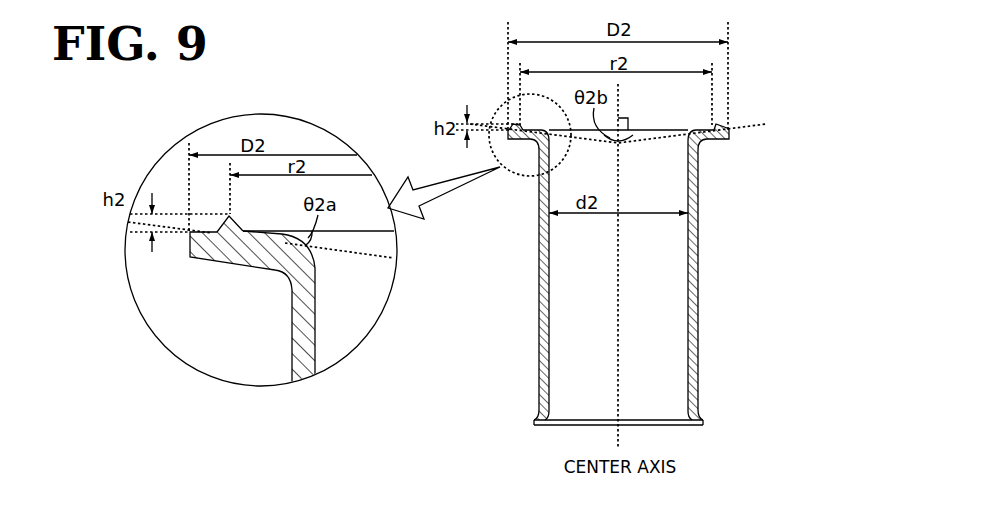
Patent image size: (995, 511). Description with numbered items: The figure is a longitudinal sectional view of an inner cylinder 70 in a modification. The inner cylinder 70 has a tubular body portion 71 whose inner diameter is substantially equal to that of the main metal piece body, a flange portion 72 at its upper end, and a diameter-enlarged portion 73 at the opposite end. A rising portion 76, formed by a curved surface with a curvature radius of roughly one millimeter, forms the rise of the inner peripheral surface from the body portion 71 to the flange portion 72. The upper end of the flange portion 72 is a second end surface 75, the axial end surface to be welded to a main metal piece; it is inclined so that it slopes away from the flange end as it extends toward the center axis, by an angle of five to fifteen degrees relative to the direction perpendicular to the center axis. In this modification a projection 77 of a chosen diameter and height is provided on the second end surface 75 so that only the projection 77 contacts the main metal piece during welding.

The inner cylinder 70 is at (412, 75).
The body portion 71 is at (699, 245).
The flange portion 72 is at (706, 142).
The diameter-enlarged portion 73 is at (705, 416).
The second end surface 75 is at (716, 125).
The rising portion 76 is at (687, 131).
The projection 77 is at (729, 129).